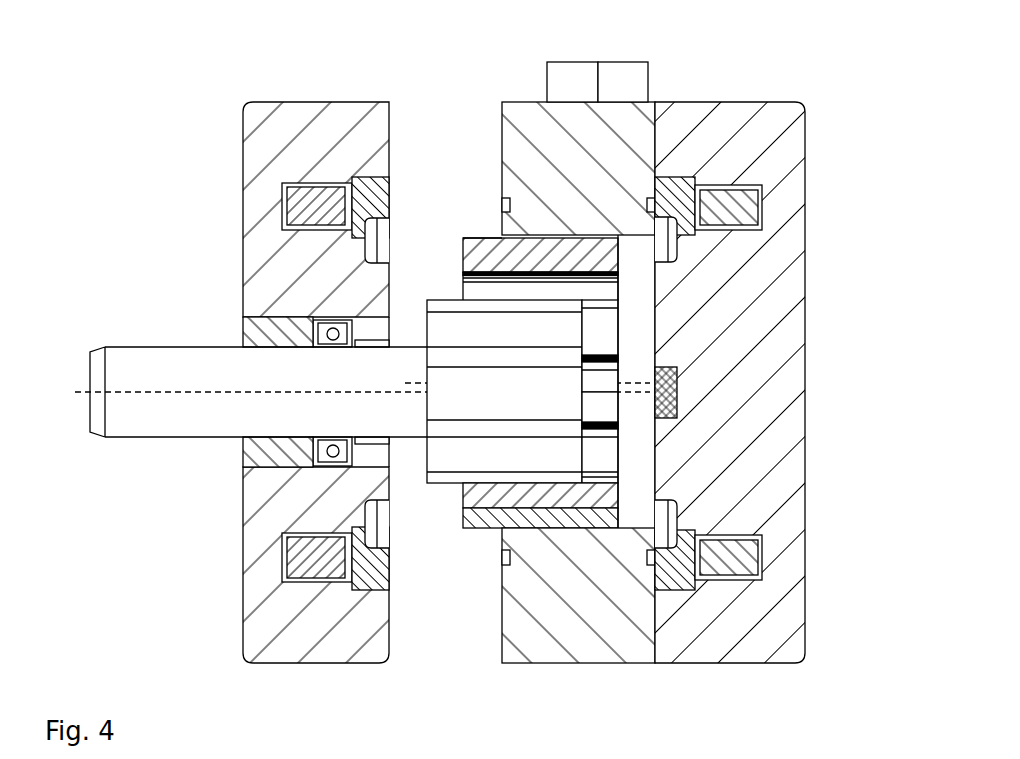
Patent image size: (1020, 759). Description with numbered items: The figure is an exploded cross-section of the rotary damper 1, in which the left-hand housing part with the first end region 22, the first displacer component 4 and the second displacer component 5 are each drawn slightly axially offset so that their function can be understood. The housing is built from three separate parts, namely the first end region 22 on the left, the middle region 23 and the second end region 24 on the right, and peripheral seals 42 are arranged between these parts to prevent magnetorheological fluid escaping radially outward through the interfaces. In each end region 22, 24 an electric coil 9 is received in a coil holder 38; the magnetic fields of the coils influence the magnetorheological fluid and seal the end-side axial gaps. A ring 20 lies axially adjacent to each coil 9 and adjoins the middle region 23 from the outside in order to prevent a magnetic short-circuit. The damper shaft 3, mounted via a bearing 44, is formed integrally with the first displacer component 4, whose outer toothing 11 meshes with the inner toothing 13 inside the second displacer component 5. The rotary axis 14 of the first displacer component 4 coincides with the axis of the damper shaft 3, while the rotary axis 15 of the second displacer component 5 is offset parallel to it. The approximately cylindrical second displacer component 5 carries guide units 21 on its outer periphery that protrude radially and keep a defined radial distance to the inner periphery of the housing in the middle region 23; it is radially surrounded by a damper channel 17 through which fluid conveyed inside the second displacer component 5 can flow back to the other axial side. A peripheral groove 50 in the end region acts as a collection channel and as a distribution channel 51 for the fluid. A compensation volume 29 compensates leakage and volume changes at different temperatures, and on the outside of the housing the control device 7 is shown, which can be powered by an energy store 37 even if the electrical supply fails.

The rotary damper 1 is at (146, 110).
The damper shaft 3 is at (125, 360).
The first displacer component 4 is at (452, 323).
The second displacer component 5 is at (477, 253).
The control device 7 is at (562, 77).
The electric coil 9 is at (318, 190).
The outer toothing 11 is at (573, 468).
The inner toothing 13 is at (600, 292).
The rotary axis 14 is at (413, 395).
The rotary axis 15 is at (413, 382).
The damper channel 17 is at (488, 225).
The ring 20 is at (388, 192).
The guide unit 21 is at (580, 518).
The first end region 22 is at (260, 118).
The middle region 23 is at (647, 113).
The second end region 24 is at (790, 118).
The compensation volume 29 is at (668, 395).
The energy store 37 is at (628, 77).
The coil holder 38 is at (283, 205).
The peripheral seal 42 is at (645, 205).
The bearing 44 is at (243, 332).
The peripheral groove 50 is at (383, 530).
The distribution channel 51 is at (667, 537).